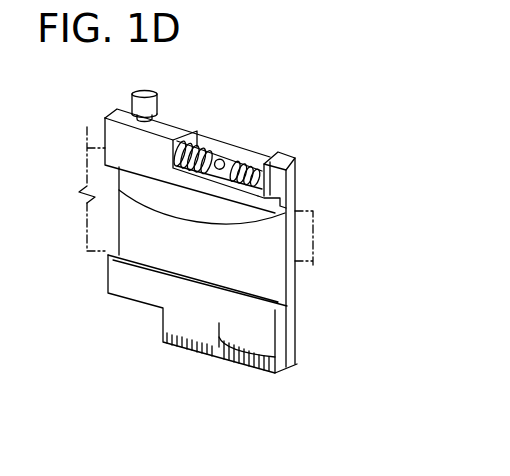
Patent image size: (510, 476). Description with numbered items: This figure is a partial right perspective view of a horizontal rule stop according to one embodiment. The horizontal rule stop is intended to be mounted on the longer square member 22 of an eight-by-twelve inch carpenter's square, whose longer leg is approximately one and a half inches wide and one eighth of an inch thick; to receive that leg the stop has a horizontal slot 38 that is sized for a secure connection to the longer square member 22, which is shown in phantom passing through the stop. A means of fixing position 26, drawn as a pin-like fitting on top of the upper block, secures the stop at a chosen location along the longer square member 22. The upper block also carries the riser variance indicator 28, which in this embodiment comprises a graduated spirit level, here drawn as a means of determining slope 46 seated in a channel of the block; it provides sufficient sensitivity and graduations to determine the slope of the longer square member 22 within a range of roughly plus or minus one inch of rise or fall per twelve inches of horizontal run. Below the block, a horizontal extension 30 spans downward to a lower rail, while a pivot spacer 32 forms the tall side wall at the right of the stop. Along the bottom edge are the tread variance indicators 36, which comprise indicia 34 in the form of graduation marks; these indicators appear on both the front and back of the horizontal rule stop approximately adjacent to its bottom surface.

The longer square member 22 is at (102, 250).
The means of fixing position 26 is at (143, 91).
The riser variance indicator 28 is at (297, 102).
The horizontal extension 30 is at (147, 228).
The pivot spacer 32 is at (288, 343).
The indicia 34 is at (256, 359).
The tread variance indicator 36 is at (238, 379).
The horizontal slot 38 is at (285, 258).
The means of determining slope 46 is at (243, 147).